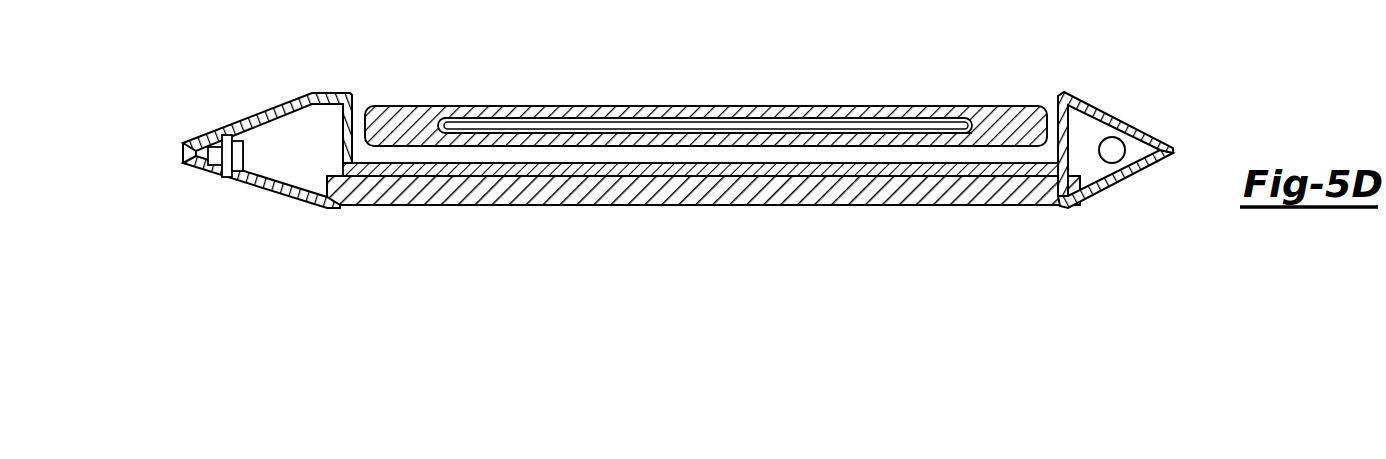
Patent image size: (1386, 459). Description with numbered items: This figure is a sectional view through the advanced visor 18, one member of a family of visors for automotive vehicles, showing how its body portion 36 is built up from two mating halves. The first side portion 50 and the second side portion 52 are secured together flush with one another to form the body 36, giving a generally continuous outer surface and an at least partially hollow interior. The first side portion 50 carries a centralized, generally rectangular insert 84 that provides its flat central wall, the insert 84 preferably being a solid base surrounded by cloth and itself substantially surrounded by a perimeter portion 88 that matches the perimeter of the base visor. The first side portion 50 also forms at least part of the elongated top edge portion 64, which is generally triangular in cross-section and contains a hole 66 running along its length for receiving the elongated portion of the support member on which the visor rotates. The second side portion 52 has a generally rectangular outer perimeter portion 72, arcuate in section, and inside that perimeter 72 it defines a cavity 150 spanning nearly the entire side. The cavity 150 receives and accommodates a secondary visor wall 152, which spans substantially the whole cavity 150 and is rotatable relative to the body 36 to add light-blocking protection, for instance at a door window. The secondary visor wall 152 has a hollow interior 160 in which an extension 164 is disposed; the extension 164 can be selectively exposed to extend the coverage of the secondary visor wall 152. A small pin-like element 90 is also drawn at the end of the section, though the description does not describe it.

The advanced visor 18 is at (583, 50).
The body portion 36 is at (802, 208).
The first side portion 50 is at (503, 210).
The second side portion 52 is at (990, 157).
The elongated top edge portion 64 is at (1083, 120).
The hole 66 is at (1120, 147).
The outer perimeter portion 72 is at (252, 113).
The insert 84 is at (630, 199).
The perimeter portion 88 is at (250, 188).
The pin 90 is at (250, 158).
The cavity 150 is at (680, 153).
The secondary visor wall 152 is at (745, 105).
The hollow interior 160 is at (877, 130).
The extension 164 is at (808, 123).